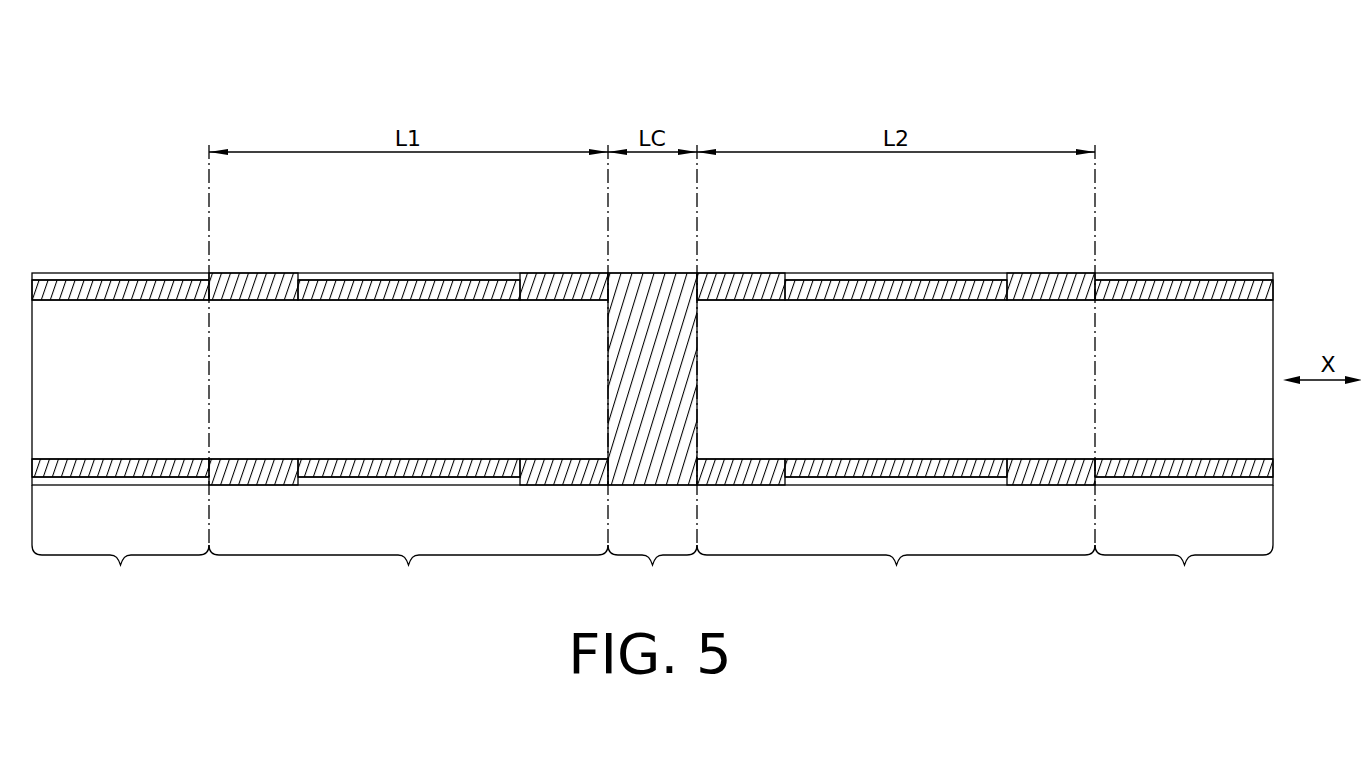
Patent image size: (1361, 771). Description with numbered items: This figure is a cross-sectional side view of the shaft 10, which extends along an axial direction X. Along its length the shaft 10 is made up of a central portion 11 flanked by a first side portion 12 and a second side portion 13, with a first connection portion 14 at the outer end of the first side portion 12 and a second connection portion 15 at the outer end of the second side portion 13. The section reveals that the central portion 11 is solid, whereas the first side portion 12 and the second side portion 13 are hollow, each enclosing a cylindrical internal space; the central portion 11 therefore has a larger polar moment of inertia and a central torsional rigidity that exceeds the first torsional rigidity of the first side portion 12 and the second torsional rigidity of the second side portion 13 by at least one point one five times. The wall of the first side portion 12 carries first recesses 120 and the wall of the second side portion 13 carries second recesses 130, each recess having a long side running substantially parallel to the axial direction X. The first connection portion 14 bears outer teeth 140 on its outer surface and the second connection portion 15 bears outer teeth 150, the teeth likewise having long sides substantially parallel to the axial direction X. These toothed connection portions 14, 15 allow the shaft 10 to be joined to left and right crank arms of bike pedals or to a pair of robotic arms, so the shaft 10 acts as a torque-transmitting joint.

The shaft 10 is at (1283, 82).
The central portion 11 is at (652, 433).
The first side portion 12 is at (408, 433).
The second side portion 13 is at (896, 433).
The first connection portion 14 is at (120, 436).
The second connection portion 15 is at (1184, 436).
The first recesses 120 is at (450, 262).
The second recesses 130 is at (862, 262).
The outer teeth 140 is at (131, 262).
The outer teeth 150 is at (1182, 262).